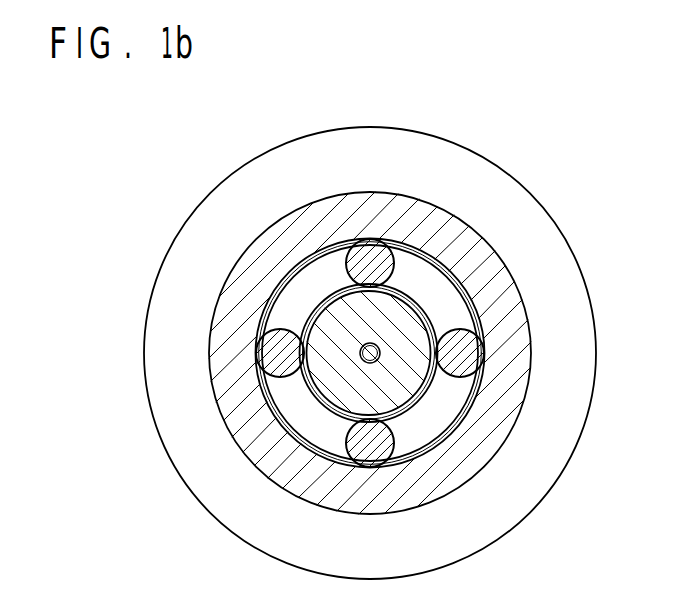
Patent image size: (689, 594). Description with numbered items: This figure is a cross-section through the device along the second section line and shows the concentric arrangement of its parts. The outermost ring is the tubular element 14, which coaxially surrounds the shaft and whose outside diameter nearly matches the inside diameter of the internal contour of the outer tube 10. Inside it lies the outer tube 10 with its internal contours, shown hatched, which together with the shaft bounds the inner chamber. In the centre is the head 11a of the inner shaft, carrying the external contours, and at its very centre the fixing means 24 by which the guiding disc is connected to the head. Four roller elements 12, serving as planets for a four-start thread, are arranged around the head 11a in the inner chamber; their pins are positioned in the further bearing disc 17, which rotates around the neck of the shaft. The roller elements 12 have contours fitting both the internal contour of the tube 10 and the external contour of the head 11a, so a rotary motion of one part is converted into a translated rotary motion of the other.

The outer tube 10 is at (370, 300).
The head 11a is at (262, 404).
The roller elements 12 is at (370, 277).
The tubular element 14 is at (316, 353).
The further bearing disc 17 is at (433, 315).
The fixing means 24 is at (503, 295).